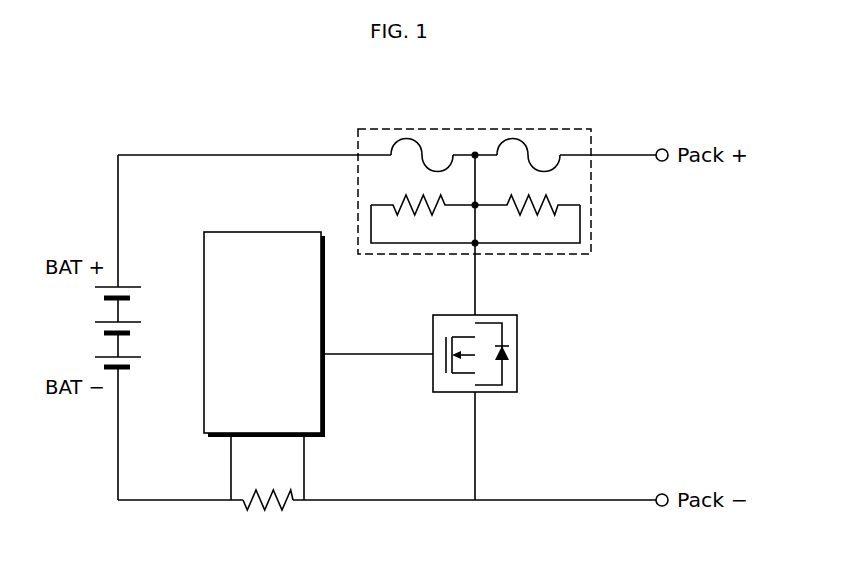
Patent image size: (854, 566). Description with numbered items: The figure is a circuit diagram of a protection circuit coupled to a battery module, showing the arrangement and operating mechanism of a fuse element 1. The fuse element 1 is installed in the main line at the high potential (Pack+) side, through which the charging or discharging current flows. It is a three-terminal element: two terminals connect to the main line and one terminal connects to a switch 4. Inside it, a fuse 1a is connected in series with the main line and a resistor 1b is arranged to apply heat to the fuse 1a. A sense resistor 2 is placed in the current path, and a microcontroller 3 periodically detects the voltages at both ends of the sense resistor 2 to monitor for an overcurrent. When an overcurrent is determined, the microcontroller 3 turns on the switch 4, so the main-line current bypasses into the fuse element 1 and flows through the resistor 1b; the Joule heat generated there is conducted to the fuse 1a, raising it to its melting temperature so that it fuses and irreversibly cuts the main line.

The fuse element 1 is at (562, 129).
The fuse 1a is at (407, 139).
The resistor 1b is at (414, 215).
The sense resistor 2 is at (263, 511).
The microcontroller 3 is at (263, 232).
The switch 4 is at (519, 355).